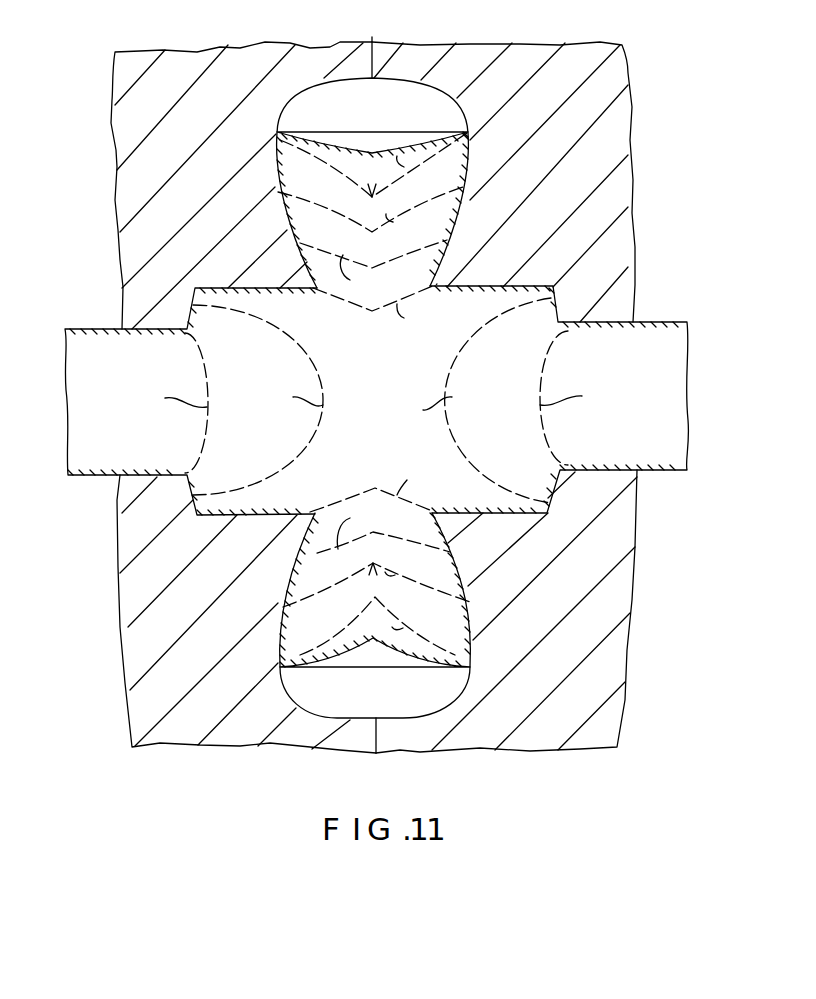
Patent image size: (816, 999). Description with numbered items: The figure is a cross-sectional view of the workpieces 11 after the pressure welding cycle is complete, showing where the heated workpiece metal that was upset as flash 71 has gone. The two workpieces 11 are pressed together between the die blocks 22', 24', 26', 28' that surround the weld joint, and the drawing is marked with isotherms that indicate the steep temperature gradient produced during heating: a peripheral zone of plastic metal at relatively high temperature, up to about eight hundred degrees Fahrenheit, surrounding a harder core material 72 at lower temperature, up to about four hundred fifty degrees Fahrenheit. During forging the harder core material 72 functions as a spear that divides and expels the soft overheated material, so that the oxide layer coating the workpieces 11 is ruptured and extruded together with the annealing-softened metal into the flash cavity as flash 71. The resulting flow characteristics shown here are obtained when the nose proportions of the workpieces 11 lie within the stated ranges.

The workpiece 11 is at (677, 318).
The lower right mold block 22' is at (541, 611).
The upper right mold block 24' is at (541, 182).
The lower left mold block 26' is at (204, 614).
The upper left mold block 28' is at (201, 183).
The flash 71 is at (378, 144).
The core material 72 is at (370, 394).